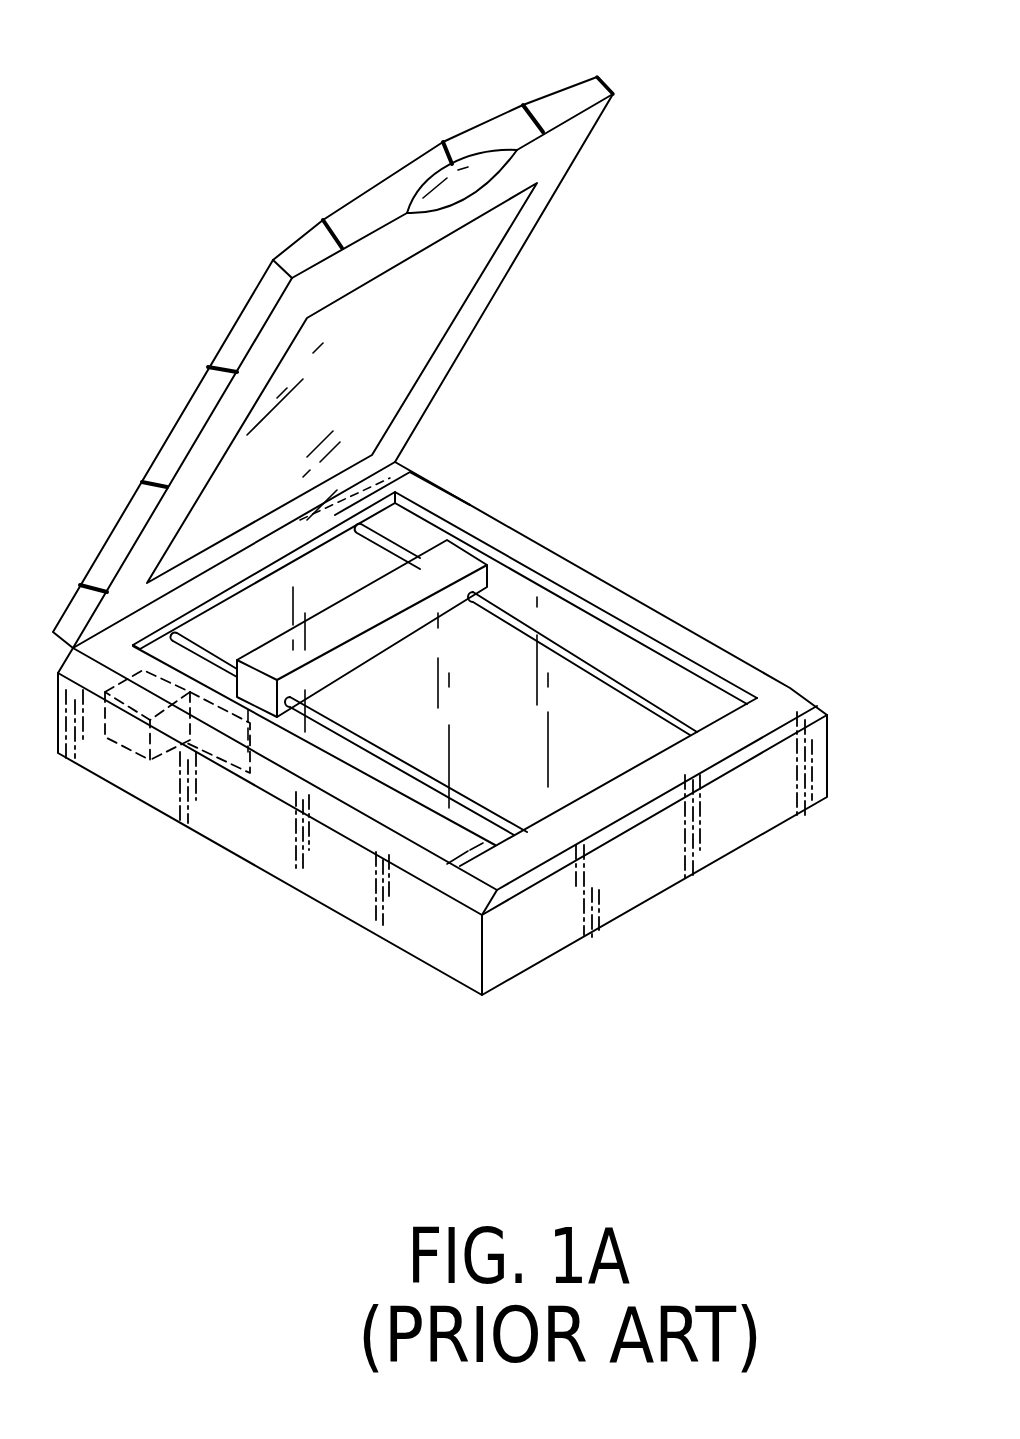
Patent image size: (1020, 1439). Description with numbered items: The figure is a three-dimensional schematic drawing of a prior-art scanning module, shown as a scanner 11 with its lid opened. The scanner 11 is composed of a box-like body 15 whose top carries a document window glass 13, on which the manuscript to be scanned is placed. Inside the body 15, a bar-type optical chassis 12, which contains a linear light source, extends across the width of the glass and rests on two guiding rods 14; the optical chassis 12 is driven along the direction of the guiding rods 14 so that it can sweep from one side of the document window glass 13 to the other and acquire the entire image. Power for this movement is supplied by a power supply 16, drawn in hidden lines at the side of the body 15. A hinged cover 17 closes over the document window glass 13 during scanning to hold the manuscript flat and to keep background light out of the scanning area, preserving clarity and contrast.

The scanner 11 is at (672, 446).
The optical chassis 12 is at (447, 557).
The document window glass 13 is at (562, 612).
The guiding rods 14 is at (568, 645).
The body 15 is at (773, 697).
The power supply 16 is at (123, 737).
The cover 17 is at (375, 203).